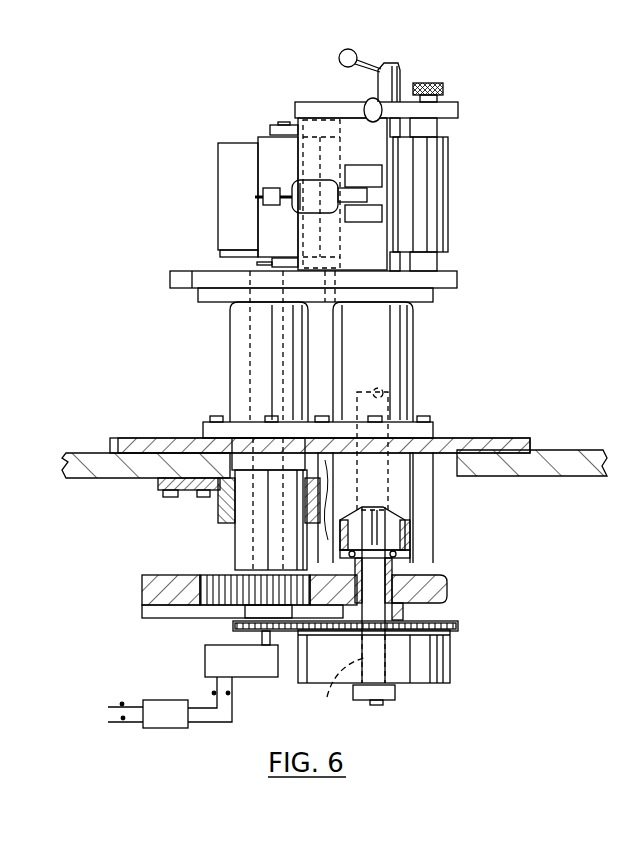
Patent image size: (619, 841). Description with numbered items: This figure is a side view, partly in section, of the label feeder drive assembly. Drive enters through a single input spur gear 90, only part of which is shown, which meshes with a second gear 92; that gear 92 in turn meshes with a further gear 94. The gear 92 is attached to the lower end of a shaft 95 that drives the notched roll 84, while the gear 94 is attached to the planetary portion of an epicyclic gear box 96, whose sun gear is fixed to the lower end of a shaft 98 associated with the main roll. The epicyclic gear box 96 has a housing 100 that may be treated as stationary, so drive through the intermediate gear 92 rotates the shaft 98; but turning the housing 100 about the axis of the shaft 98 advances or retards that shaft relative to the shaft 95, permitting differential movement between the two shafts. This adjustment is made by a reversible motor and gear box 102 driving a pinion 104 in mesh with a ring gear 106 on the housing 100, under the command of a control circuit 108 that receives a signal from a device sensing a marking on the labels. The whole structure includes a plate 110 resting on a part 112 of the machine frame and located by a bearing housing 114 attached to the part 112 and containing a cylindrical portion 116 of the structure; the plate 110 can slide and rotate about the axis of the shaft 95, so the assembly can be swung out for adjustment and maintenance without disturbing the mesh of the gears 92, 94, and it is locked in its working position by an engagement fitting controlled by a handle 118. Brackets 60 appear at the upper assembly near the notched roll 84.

The mounting bracket 60 is at (272, 124).
The notched roll 84 is at (228, 167).
The input spur gear 90 is at (155, 608).
The second gear 92 is at (203, 607).
The further gear 94 is at (427, 583).
The shaft 95 is at (253, 547).
The epicyclic gear box 96 is at (296, 672).
The shaft 98 is at (343, 689).
The housing 100 is at (431, 686).
The motor and gear box 102 is at (245, 663).
The pinion 104 is at (233, 623).
The ring gear 106 is at (458, 625).
The control circuit 108 is at (173, 717).
The plate 110 is at (492, 437).
The part of the frame 112 is at (563, 458).
The bearing housing 114 is at (218, 510).
The cylindrical portion 116 is at (237, 533).
The handle 118 is at (400, 63).